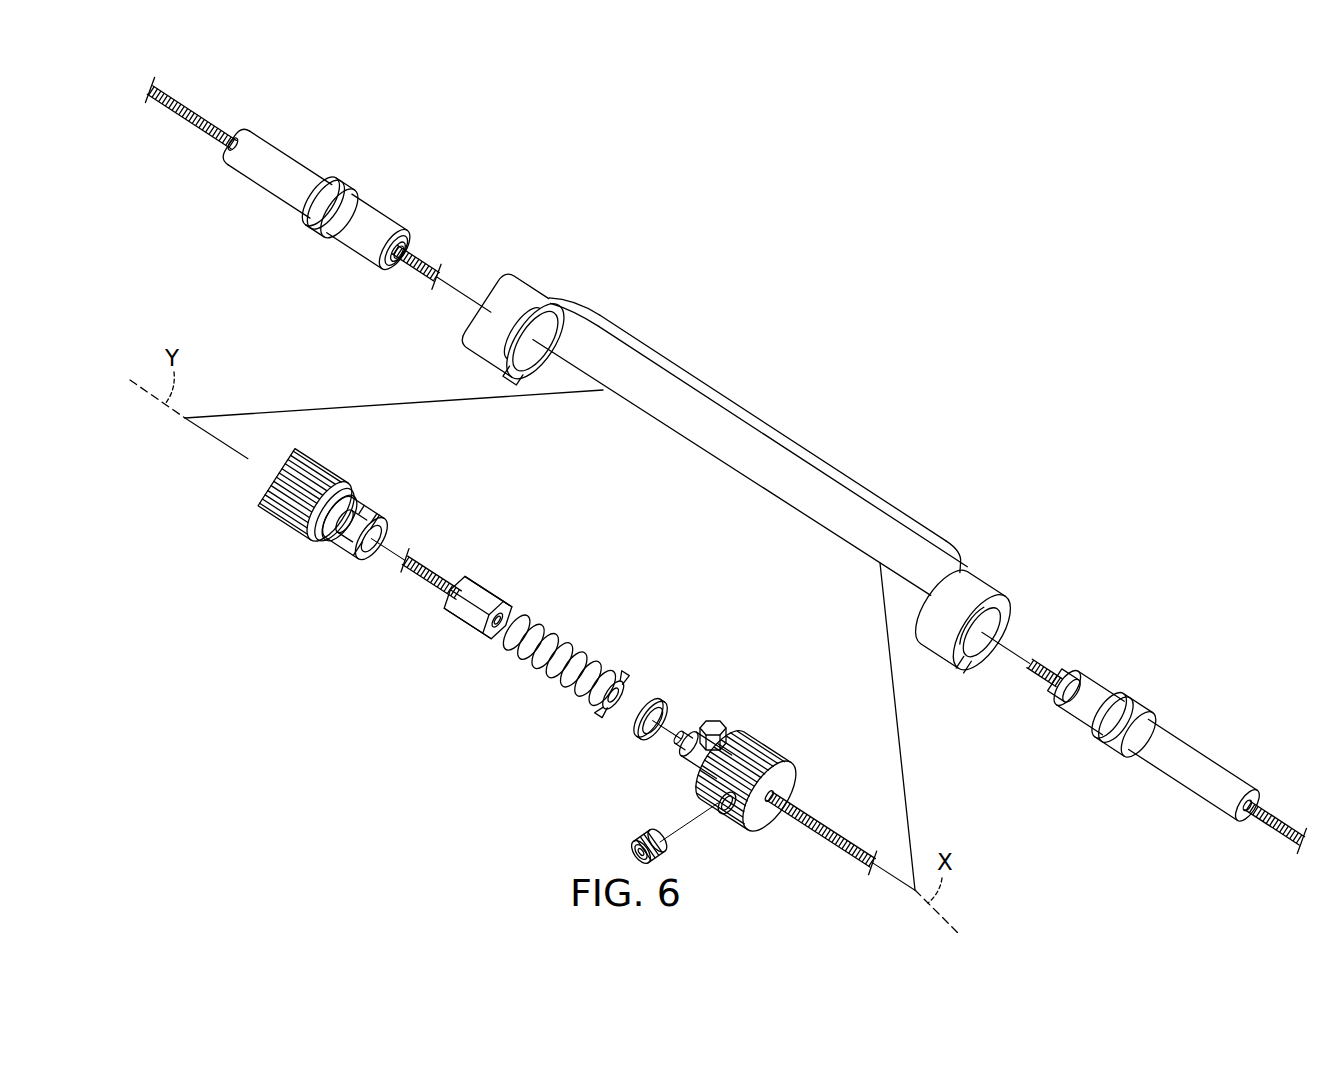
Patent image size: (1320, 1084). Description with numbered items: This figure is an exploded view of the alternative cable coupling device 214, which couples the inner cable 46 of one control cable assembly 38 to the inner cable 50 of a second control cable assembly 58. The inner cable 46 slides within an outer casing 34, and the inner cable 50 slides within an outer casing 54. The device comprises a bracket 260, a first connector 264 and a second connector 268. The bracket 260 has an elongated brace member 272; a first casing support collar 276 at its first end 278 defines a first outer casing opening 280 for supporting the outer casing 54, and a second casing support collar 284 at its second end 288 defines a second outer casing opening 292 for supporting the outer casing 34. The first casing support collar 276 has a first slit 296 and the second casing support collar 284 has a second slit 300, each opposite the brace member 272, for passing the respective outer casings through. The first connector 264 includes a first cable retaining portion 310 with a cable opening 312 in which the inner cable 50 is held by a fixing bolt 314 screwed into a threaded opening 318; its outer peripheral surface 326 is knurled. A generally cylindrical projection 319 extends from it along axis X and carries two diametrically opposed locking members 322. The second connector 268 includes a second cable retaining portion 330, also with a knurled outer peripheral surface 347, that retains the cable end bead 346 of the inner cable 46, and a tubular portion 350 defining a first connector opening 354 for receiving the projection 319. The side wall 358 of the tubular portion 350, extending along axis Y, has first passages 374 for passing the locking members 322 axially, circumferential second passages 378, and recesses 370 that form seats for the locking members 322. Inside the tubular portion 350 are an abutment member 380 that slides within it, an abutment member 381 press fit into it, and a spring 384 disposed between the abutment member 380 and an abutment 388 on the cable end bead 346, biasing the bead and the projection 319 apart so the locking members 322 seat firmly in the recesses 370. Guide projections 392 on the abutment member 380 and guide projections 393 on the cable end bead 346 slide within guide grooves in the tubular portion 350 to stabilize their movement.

The outer casing 34 is at (283, 188).
The control cable assembly 38 is at (313, 149).
The inner cable 46 is at (200, 118).
The inner cable 50 is at (1275, 815).
The outer casing 54 is at (1196, 782).
The control cable assembly 58 is at (1216, 735).
The cable coupling device 214 is at (751, 424).
The bracket 260 is at (751, 476).
The first connector 264 is at (747, 758).
The second connector 268 is at (307, 490).
The elongated brace member 272 is at (756, 428).
The first casing support collar 276 is at (974, 623).
The first end 278 is at (950, 545).
The first outer casing opening 280 is at (1000, 632).
The second casing support collar 284 is at (517, 338).
The second end 288 is at (580, 305).
The second outer casing opening 292 is at (543, 330).
The first slit 296 is at (970, 667).
The second slit 300 is at (514, 380).
The first cable retaining portion 310 is at (761, 776).
The cable opening 312 is at (764, 815).
The fixing bolt 314 is at (648, 830).
The threaded opening 318 is at (722, 815).
The cylindrical projection 319 is at (686, 696).
The locking members 322 is at (714, 722).
The outer peripheral surface 326 is at (762, 752).
The second cable retaining portion 330 is at (307, 512).
The cable end bead 346 is at (479, 608).
The outer peripheral surface 347 is at (277, 456).
The tubular portion 350 is at (373, 517).
The first connector opening 354 is at (376, 504).
The side wall 358 is at (318, 548).
The recesses 370 is at (351, 483).
The first passages 374 is at (388, 538).
The second passages 378 is at (310, 525).
The abutment member 380 is at (643, 712).
The abutment member 381 is at (641, 736).
The spring 384 is at (551, 633).
The abutment 388 is at (494, 606).
The guide projections 392 is at (610, 680).
The guide projections 393 is at (494, 582).